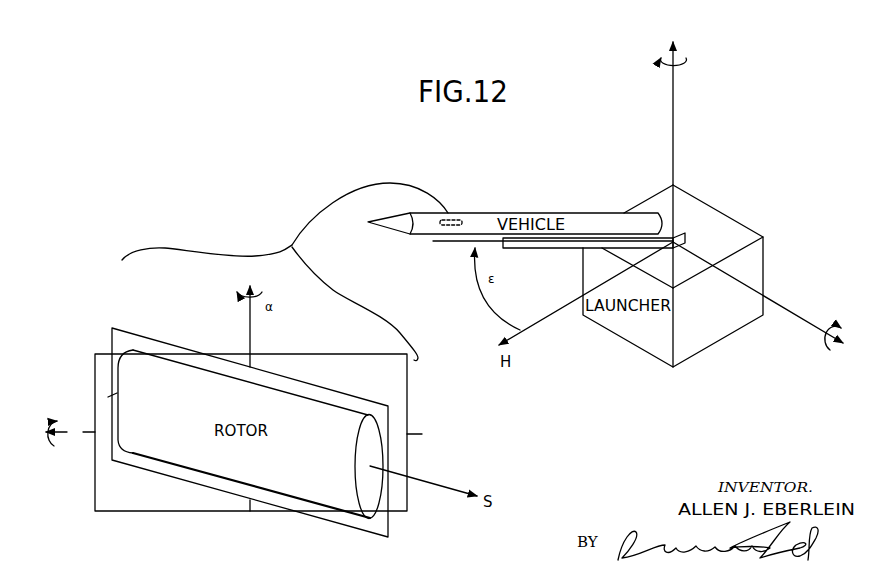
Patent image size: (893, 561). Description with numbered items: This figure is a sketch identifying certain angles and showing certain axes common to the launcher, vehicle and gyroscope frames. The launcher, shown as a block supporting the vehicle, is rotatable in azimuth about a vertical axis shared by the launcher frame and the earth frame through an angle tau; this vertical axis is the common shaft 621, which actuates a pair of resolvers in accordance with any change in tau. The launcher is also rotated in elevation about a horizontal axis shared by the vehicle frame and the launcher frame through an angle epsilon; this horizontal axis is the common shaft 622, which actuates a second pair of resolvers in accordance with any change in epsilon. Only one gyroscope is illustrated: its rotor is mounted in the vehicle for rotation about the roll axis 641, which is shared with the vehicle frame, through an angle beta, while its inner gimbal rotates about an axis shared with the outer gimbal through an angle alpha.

The common shaft 621 is at (674, 140).
The common shaft 622 is at (779, 301).
The roll axis 641 is at (70, 430).